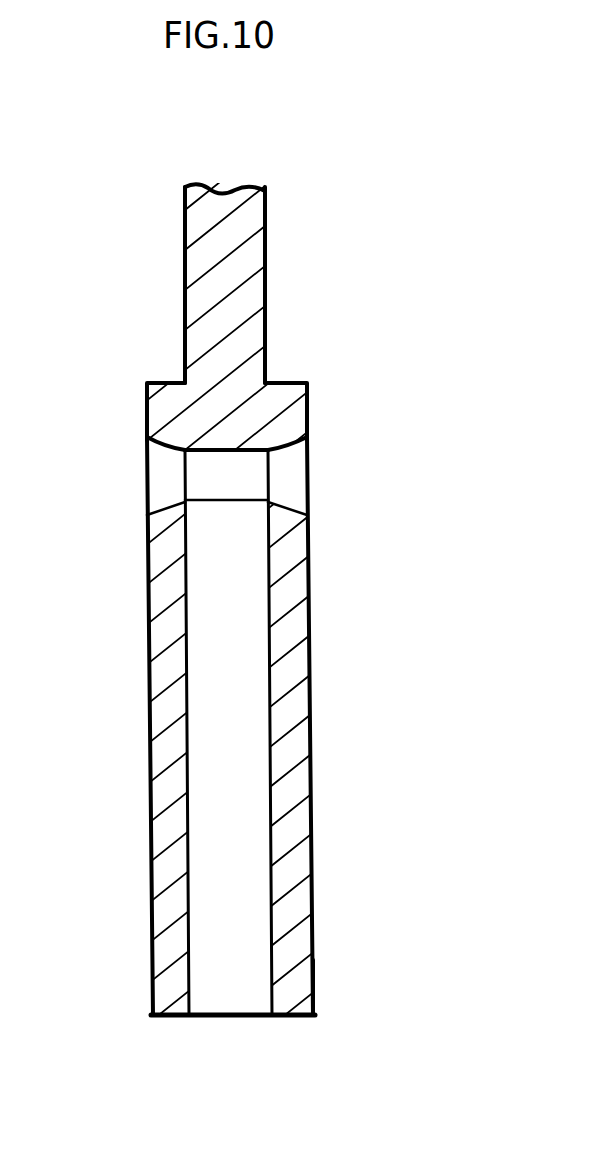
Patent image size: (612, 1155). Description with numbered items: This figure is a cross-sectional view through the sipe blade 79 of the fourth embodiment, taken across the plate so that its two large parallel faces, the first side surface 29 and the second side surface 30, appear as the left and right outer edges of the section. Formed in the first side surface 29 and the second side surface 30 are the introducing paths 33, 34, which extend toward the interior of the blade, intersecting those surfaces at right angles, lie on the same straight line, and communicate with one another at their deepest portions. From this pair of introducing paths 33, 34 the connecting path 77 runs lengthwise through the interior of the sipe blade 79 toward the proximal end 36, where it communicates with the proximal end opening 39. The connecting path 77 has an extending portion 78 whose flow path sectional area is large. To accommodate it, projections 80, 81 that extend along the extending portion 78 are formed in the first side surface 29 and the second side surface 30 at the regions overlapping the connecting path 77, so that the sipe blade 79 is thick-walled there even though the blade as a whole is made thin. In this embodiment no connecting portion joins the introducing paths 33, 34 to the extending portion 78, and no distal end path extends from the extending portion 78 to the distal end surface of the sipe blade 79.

The second side surface 30 is at (267, 228).
The first side surface 29 is at (185, 277).
The sipe blade 79 is at (297, 278).
The projection 80 is at (147, 400).
The projection 81 is at (303, 397).
The introducing path 33 is at (167, 477).
The introducing path 34 is at (288, 480).
The connecting path 77 is at (255, 601).
The extending portion 78 is at (240, 740).
The proximal end opening 39 is at (227, 1018).
The proximal end 36 is at (288, 1018).